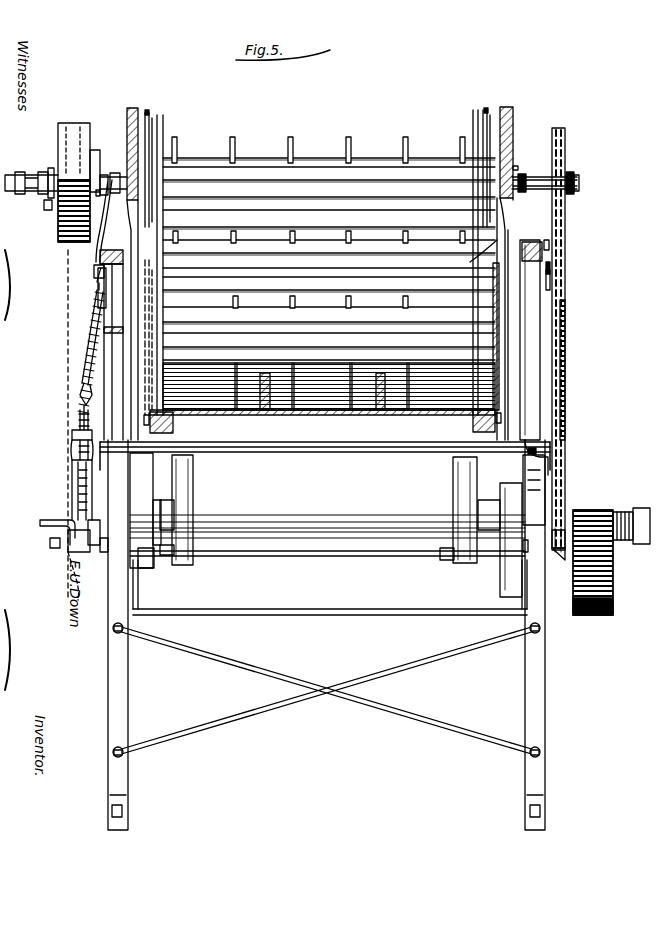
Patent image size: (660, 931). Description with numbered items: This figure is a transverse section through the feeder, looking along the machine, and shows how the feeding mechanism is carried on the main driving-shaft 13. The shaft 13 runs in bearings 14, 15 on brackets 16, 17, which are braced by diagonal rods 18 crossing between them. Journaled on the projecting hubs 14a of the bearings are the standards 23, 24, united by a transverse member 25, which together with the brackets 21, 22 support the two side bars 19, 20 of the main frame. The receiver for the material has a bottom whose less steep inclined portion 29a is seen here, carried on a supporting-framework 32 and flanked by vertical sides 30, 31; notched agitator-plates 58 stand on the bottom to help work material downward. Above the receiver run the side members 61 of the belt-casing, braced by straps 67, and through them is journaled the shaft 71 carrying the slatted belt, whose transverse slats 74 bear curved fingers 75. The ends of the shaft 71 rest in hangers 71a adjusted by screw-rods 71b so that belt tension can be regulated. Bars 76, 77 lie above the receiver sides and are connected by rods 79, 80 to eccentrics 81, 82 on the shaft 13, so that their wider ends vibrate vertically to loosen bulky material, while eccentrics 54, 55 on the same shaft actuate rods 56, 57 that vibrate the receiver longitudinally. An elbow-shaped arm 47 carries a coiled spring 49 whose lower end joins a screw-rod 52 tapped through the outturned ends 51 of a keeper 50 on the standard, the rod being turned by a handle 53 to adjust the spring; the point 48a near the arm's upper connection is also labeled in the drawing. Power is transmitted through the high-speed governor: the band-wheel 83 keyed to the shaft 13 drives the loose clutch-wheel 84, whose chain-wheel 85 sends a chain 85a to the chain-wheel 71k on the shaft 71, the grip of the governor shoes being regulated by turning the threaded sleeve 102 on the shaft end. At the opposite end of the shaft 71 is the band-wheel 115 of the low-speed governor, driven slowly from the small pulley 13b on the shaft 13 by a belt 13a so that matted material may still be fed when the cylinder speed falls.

The band-wheel 115 is at (68, 125).
The bar 76 is at (133, 108).
The screw-rod 71b is at (148, 112).
The hanger 71a is at (151, 118).
The side member 61 is at (165, 128).
The shaft 71 is at (138, 205).
The arm 47 is at (122, 185).
The slat 74 is at (297, 185).
The finger 75 is at (355, 137).
The strap 67 is at (474, 120).
The bar 77 is at (514, 133).
The chain-wheel 71k is at (560, 128).
The side bar 20 is at (548, 252).
The rod 80 is at (497, 260).
The pivot 48a is at (96, 272).
The side bar 19 is at (100, 258).
The vertical side 31 is at (98, 280).
The coiled spring 49 is at (80, 313).
The bracket 21 is at (108, 350).
The belt 13a is at (75, 378).
The vertical side 30 is at (150, 338).
The bracket 22 is at (540, 356).
The chain 85a is at (566, 388).
The bracket 17 is at (560, 445).
The supporting-framework 32 is at (173, 425).
The notched agitator-plate 58 is at (246, 412).
The inclined portion 29a is at (263, 412).
The transverse member 25 is at (333, 448).
The rod 57 is at (76, 422).
The keeper 50 is at (72, 440).
The outturned end 51 is at (72, 460).
The bracket 16 is at (135, 470).
The standard 23 is at (95, 483).
The screw-rod 52 is at (75, 498).
The eccentric 54 is at (205, 515).
The main driving-shaft 13 is at (353, 522).
The eccentric 55 is at (455, 507).
The standard 24 is at (548, 466).
The bearing 15 is at (538, 520).
The sleeve 102 is at (630, 512).
The chain-wheel 85 is at (568, 518).
The handle 53 is at (52, 540).
The pulley 13b is at (68, 550).
The bearing 14 is at (100, 548).
The projecting hub 14a is at (93, 585).
The rod 56 is at (168, 575).
The eccentric 81 is at (190, 595).
The eccentric 82 is at (506, 580).
The band-wheel 83 is at (613, 578).
The clutch-wheel 84 is at (562, 582).
The diagonal rod 18 is at (320, 680).
The rod 79 is at (125, 272).